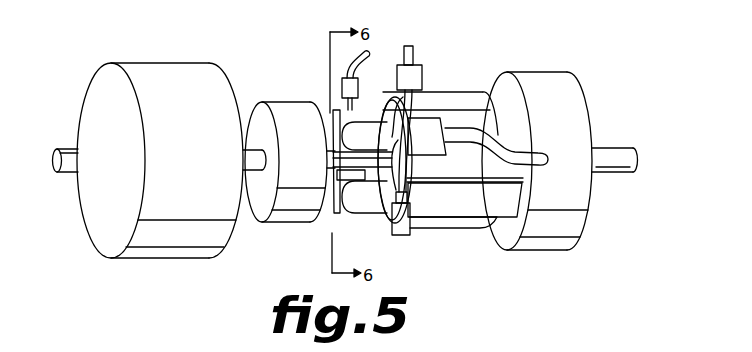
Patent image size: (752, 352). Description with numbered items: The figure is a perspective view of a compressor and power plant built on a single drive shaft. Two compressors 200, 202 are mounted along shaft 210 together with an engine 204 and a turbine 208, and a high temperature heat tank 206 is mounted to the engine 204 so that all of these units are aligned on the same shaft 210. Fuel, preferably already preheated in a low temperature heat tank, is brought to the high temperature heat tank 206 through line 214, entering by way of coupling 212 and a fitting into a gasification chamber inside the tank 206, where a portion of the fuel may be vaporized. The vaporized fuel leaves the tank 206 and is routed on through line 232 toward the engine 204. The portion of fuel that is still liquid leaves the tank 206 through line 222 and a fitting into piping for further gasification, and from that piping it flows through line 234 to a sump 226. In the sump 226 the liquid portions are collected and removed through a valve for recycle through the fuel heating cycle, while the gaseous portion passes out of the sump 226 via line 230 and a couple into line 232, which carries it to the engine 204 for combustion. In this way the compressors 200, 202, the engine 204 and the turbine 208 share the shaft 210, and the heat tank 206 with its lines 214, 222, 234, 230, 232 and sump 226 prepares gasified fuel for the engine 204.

The compressor 200 is at (157, 70).
The compressor 202 is at (275, 105).
The engine 204 is at (463, 220).
The high temperature heat tank 206 is at (437, 205).
The turbine 208 is at (542, 85).
The shaft 210 is at (612, 155).
The coupling 212 is at (341, 88).
The line 214 is at (365, 63).
The line 222 is at (412, 167).
The sump 226 is at (402, 234).
The line 230 is at (413, 108).
The line 232 is at (413, 55).
The line 234 is at (422, 73).